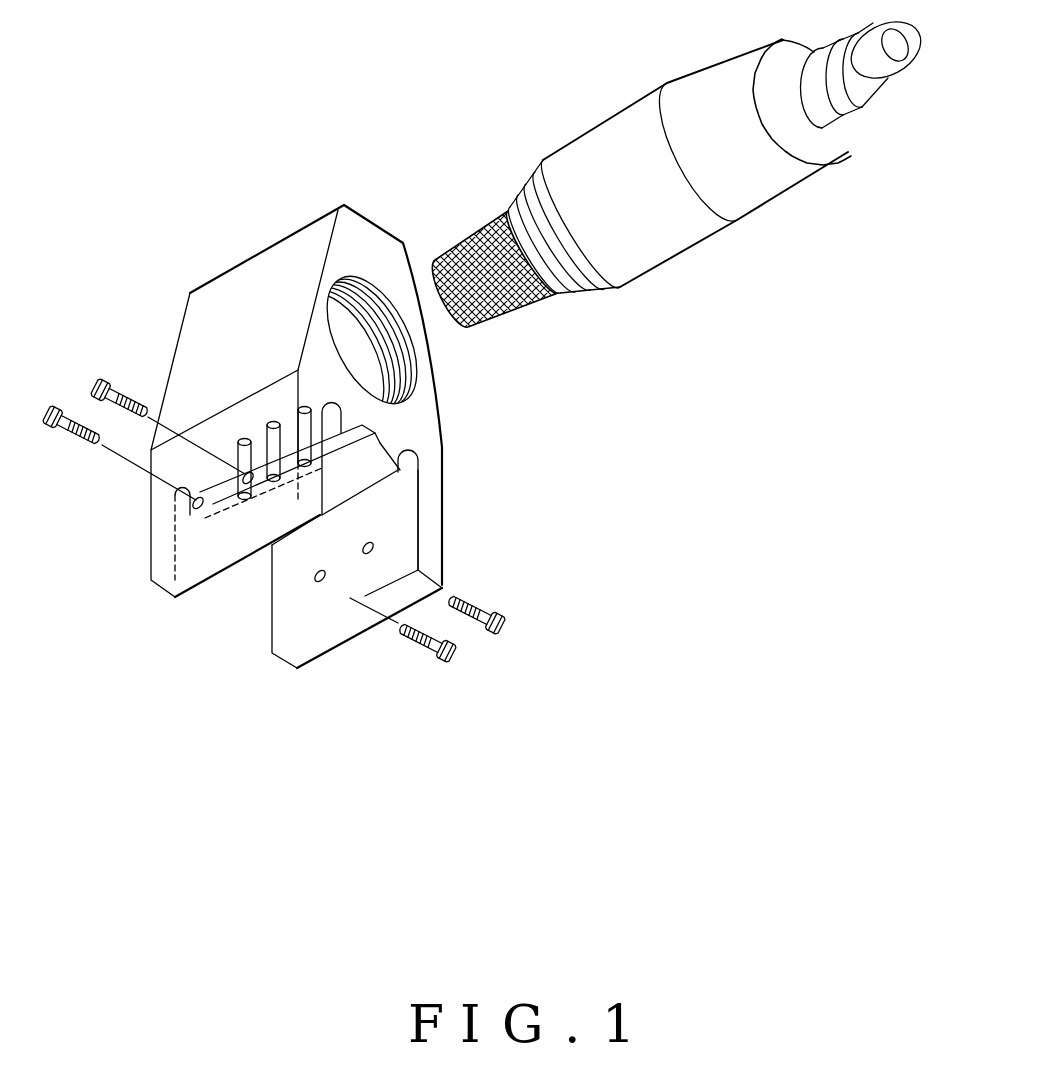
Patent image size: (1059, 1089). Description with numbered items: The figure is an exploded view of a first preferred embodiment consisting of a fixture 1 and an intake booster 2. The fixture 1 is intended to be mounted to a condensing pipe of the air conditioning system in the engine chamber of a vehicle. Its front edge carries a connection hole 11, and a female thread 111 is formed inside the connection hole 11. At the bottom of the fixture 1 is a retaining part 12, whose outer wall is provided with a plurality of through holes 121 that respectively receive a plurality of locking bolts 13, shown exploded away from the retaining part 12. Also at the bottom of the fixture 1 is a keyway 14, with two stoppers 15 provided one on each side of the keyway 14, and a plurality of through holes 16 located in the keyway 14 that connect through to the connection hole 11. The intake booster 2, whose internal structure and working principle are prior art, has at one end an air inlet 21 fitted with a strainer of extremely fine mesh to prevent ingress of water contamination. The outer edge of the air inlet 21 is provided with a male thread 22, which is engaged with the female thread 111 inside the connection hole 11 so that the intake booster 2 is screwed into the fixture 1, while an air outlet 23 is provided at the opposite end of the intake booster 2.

The fixture 1 is at (270, 278).
The connection hole 11 is at (343, 340).
The female thread 111 is at (377, 315).
The retaining part 12 is at (345, 610).
The through holes 121 is at (368, 549).
The locking bolts 13 is at (52, 408).
The keyway 14 is at (375, 441).
The stoppers 15 is at (418, 460).
The through holes 16 is at (290, 465).
The intake booster 2 is at (665, 235).
The air inlet 21 is at (488, 323).
The male thread 22 is at (577, 290).
The air outlet 23 is at (892, 53).